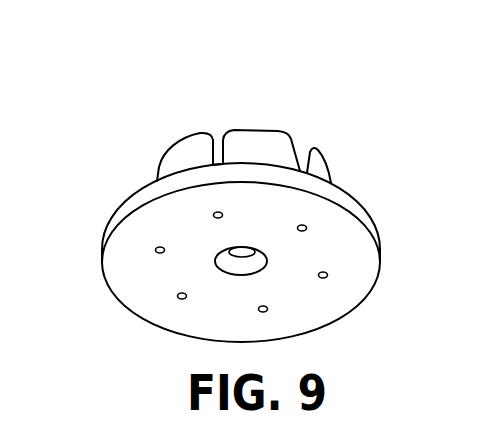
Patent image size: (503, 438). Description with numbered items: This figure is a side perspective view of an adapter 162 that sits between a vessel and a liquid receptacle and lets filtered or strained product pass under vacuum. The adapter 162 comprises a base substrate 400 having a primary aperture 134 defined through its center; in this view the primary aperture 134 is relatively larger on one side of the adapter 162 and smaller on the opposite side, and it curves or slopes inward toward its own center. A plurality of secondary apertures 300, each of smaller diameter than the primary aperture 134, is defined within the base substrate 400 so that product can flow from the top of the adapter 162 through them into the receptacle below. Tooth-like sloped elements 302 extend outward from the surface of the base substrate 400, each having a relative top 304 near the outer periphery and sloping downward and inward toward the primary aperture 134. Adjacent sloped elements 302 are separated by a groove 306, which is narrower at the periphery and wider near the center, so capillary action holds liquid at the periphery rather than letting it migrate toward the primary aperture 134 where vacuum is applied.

The primary aperture 134 is at (230, 264).
The adapter 162 is at (337, 135).
The secondary apertures 300 is at (157, 252).
The sloped elements 302 is at (185, 143).
The relative top 304 is at (283, 116).
The groove 306 is at (221, 119).
The base substrate 400 is at (348, 197).